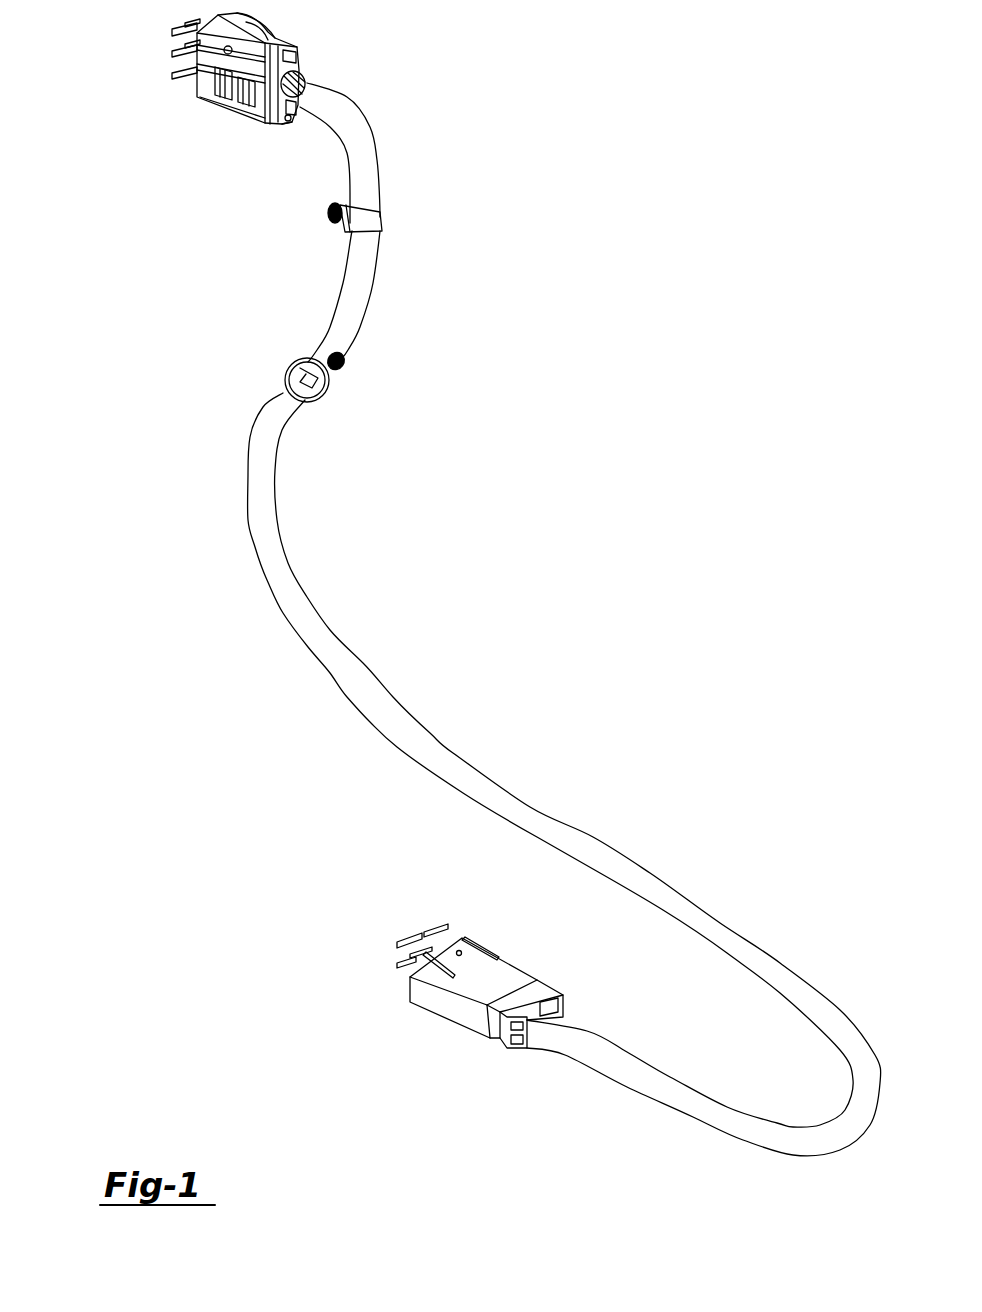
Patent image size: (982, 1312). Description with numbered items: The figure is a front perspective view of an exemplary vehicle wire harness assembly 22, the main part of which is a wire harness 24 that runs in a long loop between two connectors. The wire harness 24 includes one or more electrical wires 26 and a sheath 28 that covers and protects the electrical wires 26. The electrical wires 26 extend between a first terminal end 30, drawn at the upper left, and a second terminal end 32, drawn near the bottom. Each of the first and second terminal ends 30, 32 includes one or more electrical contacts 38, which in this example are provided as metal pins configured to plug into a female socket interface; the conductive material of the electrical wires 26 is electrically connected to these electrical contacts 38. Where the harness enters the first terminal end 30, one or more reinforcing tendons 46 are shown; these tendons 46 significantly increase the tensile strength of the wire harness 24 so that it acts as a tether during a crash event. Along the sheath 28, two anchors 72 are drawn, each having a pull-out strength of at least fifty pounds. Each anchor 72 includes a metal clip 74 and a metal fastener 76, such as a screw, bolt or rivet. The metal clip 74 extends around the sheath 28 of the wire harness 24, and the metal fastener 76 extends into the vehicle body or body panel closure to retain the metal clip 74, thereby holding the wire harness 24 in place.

The vehicle wire harness assembly 22 is at (600, 365).
The wire harness 24 is at (458, 748).
The electrical wire 26 is at (300, 108).
The sheath 28 is at (368, 697).
The first terminal end 30 is at (140, 50).
The second terminal end 32 is at (410, 1020).
The electrical contacts 38 is at (180, 76).
The reinforcing tendon 46 is at (302, 72).
The anchor 72 is at (312, 230).
The metal clip 74 is at (380, 220).
The metal fastener 76 is at (323, 213).